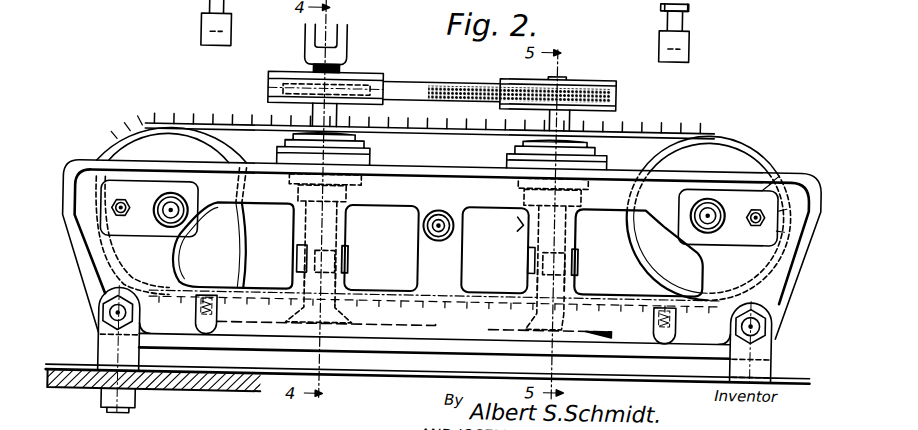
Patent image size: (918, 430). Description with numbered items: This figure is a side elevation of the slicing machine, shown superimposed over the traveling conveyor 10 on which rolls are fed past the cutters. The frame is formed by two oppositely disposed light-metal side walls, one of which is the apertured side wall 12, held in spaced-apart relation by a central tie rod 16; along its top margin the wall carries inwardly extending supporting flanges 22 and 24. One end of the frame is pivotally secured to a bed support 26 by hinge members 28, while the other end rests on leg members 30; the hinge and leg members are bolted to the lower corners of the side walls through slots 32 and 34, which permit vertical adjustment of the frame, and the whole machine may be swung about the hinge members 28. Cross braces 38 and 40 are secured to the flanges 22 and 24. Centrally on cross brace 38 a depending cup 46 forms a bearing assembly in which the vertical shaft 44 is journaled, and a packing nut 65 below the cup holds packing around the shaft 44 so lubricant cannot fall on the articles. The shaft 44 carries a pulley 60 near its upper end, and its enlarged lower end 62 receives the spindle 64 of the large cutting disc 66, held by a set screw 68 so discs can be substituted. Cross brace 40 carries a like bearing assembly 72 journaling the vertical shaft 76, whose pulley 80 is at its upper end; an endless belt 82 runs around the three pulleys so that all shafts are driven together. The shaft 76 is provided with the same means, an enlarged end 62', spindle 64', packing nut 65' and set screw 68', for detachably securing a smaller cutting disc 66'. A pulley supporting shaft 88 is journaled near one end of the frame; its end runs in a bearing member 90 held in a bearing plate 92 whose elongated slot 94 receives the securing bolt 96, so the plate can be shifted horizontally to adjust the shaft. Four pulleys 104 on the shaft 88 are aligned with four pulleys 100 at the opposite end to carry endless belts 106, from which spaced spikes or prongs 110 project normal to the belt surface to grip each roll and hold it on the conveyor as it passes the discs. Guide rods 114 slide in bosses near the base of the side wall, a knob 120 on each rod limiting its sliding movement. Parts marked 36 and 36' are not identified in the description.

The traveling conveyor 10 is at (622, 372).
The side wall 12 is at (72, 166).
The central tie rod 16 is at (423, 226).
The supporting flange 22 is at (291, 183).
The supporting flange 24 is at (517, 184).
The bed support 26 is at (88, 396).
The hinge member 28 is at (127, 362).
The leg member 30 is at (766, 368).
The slot 32 is at (100, 339).
The slot 34 is at (772, 337).
The nut 36 is at (129, 418).
The upper nut 36' is at (142, 11).
The cross brace 38 is at (366, 160).
The cross brace 40 is at (590, 162).
The shaft 44 is at (310, 113).
The depending cup 46 is at (358, 187).
The pulley 60 is at (278, 75).
The enlarged lower end of shaft 62 is at (294, 261).
The adjusting nut 62' is at (523, 258).
The spindle 64 is at (289, 277).
The stem 64' is at (522, 276).
The packing nut 65 is at (282, 253).
The collar 65' is at (509, 250).
The cutting disc 66 is at (326, 329).
The cutting disc 66' is at (549, 335).
The set screw 68 is at (362, 260).
The roller 68' is at (593, 262).
The bearing assembly 72 is at (517, 225).
The vertical shaft 76 is at (565, 117).
The pulley 80 is at (578, 81).
The endless belt 82 is at (422, 90).
The pulley supporting shaft 88 is at (170, 218).
The bearing member 90 is at (158, 230).
The bearing plate 92 is at (122, 220).
The elongated slot 94 is at (118, 216).
The bolt 96 is at (108, 227).
The pulleys 100 is at (140, 132).
The pulleys 104 is at (742, 160).
The endless belts 106 is at (730, 142).
The spikes or prongs 110 is at (712, 130).
The rod 114 is at (207, 339).
The knob 120 is at (656, 0).